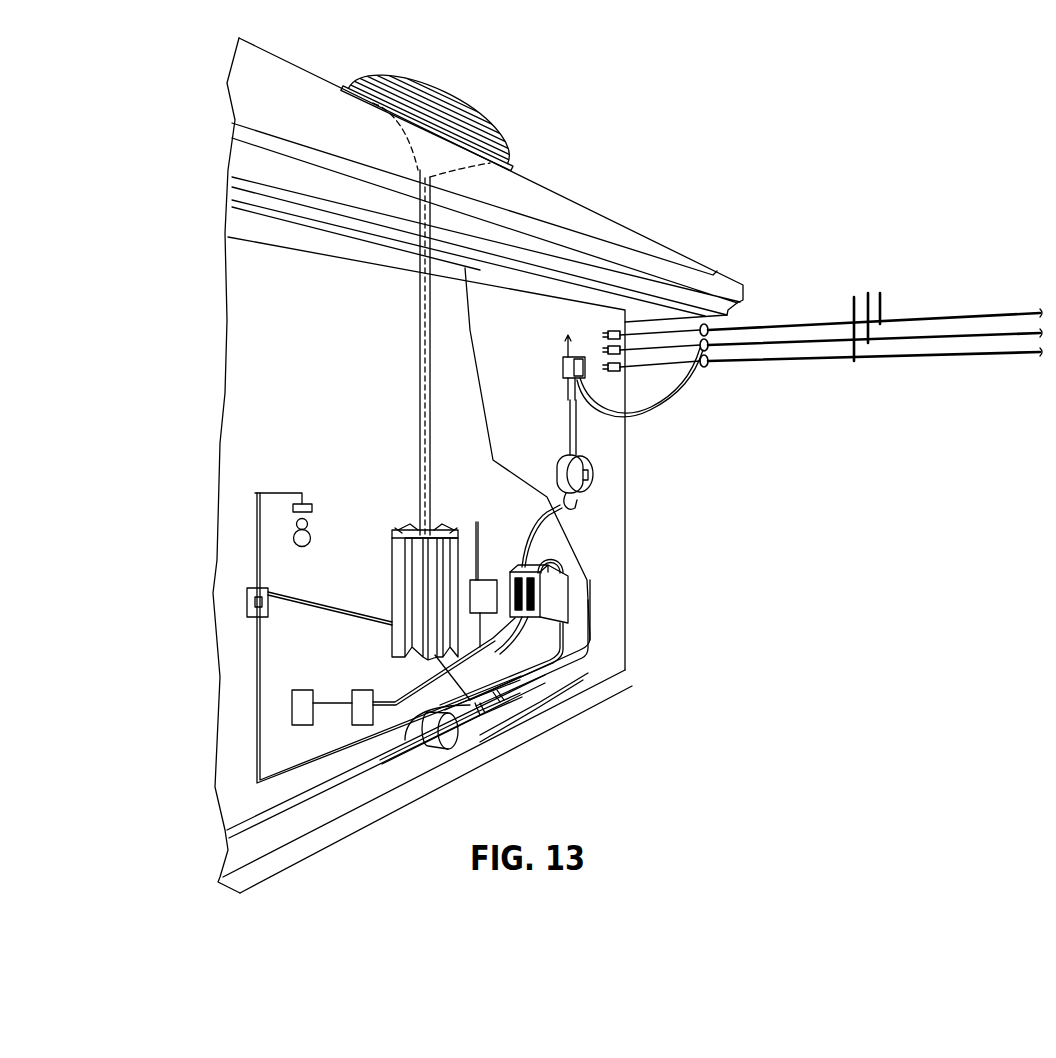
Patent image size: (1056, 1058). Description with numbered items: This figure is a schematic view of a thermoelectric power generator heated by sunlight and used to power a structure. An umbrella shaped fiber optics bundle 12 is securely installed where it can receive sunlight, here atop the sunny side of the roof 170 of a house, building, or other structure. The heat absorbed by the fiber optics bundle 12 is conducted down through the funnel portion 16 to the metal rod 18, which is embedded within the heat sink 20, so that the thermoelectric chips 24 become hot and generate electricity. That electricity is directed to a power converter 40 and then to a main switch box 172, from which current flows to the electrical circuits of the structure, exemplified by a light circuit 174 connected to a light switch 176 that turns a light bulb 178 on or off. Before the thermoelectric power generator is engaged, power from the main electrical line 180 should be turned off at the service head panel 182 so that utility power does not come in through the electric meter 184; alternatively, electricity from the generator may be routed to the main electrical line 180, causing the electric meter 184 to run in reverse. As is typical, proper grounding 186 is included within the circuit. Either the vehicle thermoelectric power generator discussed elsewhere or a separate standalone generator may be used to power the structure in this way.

The fiber optics bundle 12 is at (447, 100).
The funnel portion 16 is at (420, 340).
The metal rod 18 is at (421, 530).
The heat sink 20 is at (438, 530).
The thermoelectric chips 24 is at (488, 655).
The power converter 40 is at (487, 580).
The roof 170 is at (533, 186).
The main switch box 172 is at (568, 598).
The light circuit 174 is at (257, 676).
The light switch 176 is at (247, 600).
The light bulb 178 is at (309, 546).
The main electrical line 180 is at (930, 358).
The service head panel 182 is at (563, 368).
The electric meter 184 is at (592, 468).
The grounding 186 is at (565, 640).